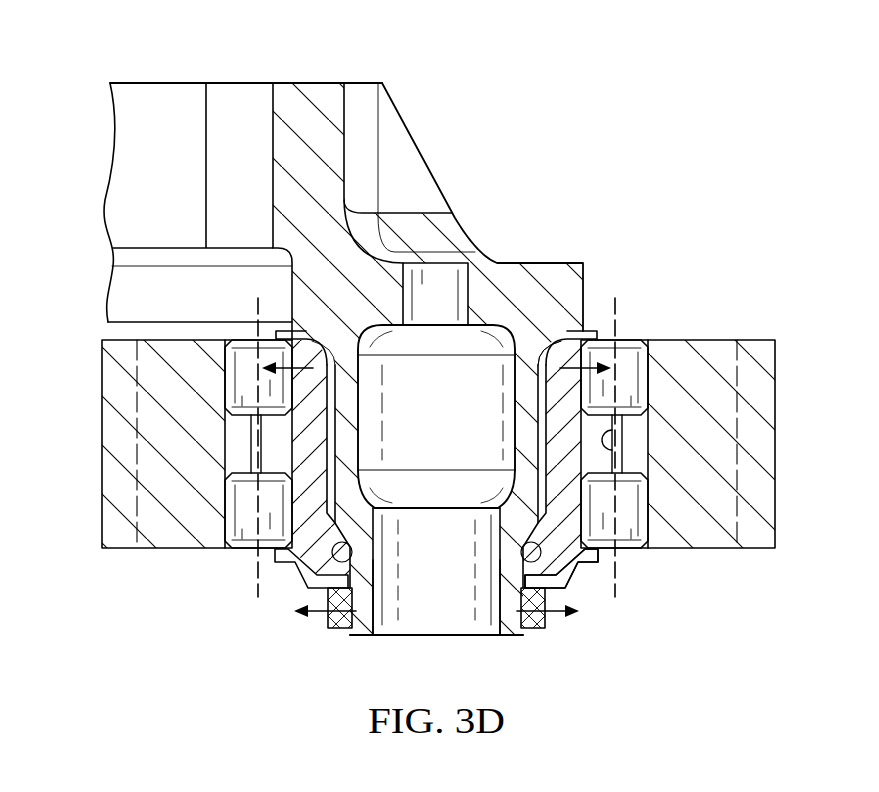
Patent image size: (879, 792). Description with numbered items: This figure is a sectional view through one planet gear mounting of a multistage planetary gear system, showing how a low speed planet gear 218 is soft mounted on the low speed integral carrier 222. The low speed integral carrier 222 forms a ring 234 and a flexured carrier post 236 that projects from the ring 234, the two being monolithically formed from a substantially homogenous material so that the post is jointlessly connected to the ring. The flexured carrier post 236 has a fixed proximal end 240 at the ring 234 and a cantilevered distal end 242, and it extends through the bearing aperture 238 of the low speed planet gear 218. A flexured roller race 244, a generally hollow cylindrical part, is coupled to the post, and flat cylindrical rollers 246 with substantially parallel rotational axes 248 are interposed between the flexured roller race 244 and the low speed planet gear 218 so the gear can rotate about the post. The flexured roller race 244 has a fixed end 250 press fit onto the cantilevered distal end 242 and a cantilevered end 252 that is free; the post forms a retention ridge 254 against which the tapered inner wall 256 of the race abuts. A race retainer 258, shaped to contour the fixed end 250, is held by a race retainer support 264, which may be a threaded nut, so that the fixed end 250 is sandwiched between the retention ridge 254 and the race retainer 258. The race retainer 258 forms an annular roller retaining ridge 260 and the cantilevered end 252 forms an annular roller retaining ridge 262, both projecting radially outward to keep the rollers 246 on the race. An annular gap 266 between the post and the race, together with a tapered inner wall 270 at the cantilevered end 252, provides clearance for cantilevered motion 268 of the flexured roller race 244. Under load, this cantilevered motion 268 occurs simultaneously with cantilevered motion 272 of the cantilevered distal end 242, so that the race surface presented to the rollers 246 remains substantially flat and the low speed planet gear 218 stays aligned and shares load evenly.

The low speed integral carrier 222 is at (420, 330).
The ring 234 is at (320, 83).
The tapered inner wall 270 is at (543, 320).
The cantilevered end 252 is at (468, 408).
The annular roller retaining ridge 262 is at (600, 331).
The rotational axis 248 is at (256, 304).
The fixed proximal end 240 is at (493, 337).
The cantilevered motion 268 is at (600, 385).
The annular gap 266 is at (331, 440).
The bearing aperture 238 is at (625, 445).
The flexured roller race 244 is at (258, 440).
The low speed planet gear 218 is at (100, 490).
The roller 246 is at (635, 520).
The tapered inner wall 256 is at (498, 518).
The retention ridge 254 is at (348, 575).
The annular roller retaining ridge 260 is at (598, 568).
The race retainer 258 is at (282, 590).
The fixed end 250 is at (586, 578).
The race retainer support 264 is at (340, 632).
The cantilevered motion 272 is at (550, 614).
The flexured carrier post 236 is at (436, 628).
The cantilevered distal end 242 is at (436, 637).